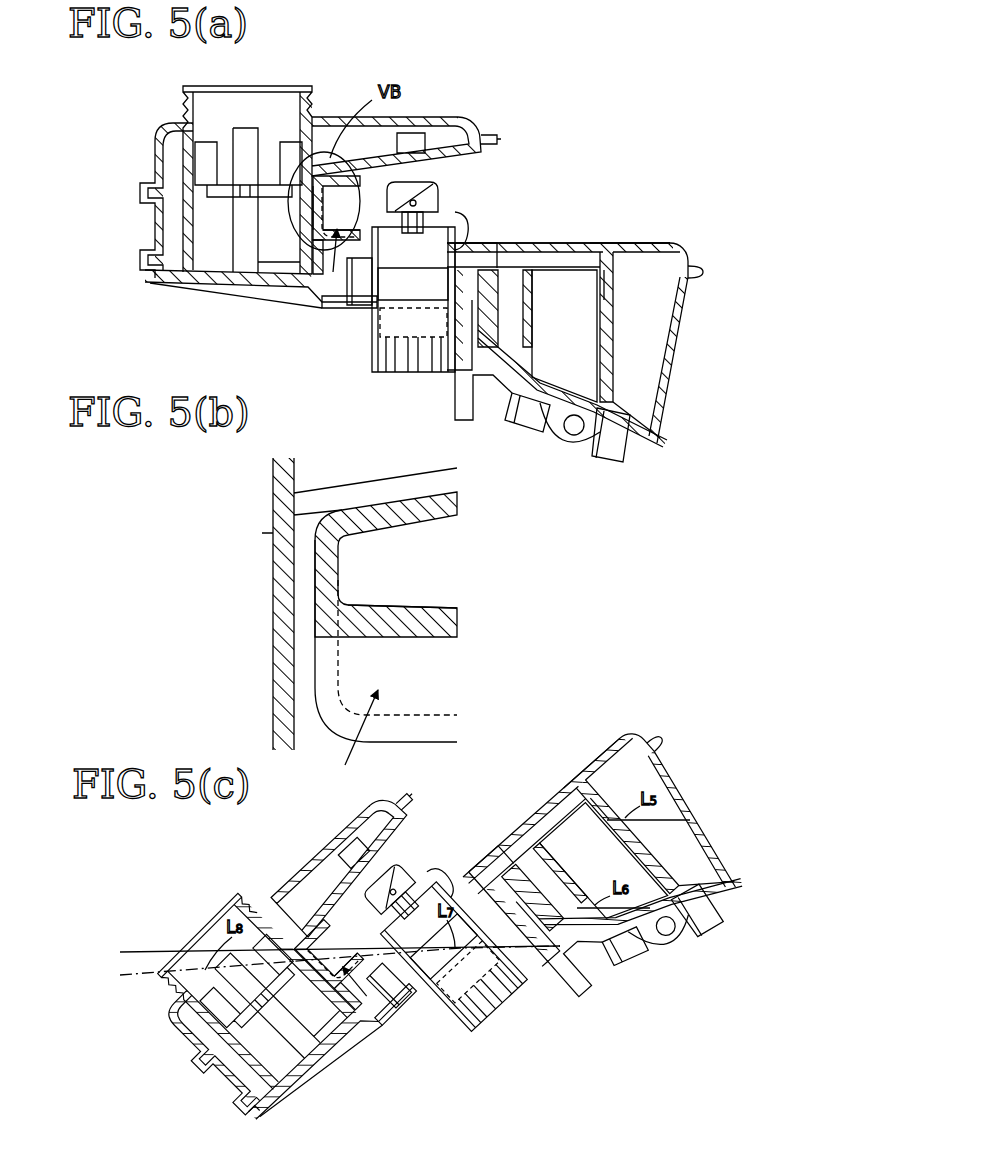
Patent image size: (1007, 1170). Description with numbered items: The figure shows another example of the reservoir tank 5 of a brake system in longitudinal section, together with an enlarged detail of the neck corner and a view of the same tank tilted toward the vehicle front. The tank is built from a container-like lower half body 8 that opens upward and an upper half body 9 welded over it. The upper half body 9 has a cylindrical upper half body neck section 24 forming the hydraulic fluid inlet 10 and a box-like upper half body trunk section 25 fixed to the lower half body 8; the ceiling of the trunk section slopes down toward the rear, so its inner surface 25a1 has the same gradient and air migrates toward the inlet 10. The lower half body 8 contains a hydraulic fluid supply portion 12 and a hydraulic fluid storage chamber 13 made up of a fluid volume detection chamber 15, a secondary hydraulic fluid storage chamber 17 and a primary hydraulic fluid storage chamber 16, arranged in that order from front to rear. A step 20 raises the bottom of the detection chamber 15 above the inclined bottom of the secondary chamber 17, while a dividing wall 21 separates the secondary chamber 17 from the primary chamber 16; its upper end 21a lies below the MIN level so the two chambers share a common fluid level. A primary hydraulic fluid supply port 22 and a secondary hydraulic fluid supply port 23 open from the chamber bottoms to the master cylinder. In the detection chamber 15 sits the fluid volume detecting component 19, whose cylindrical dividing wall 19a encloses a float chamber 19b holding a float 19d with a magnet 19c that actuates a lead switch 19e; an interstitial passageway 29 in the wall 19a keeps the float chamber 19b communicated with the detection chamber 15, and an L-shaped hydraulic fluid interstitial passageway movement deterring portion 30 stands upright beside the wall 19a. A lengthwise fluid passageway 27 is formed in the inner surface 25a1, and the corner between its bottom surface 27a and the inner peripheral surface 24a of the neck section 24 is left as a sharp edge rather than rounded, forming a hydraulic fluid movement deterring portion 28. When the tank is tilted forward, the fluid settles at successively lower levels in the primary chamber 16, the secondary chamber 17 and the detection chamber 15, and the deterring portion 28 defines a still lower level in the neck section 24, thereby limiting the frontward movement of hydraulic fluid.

In FIG. 5A, the reservoir tank 5 is at (598, 200).
In FIG. 5A, the lower half body 8 is at (683, 359).
In FIG. 5C, the lower half body 8 is at (703, 823).
In FIG. 5A, the upper half body 9 is at (565, 240).
In FIG. 5C, the upper half body 9 is at (500, 833).
In FIG. 5A, the hydraulic fluid inlet 10 is at (310, 97).
In FIG. 5C, the hydraulic fluid inlet 10 is at (223, 905).
In FIG. 5A, the hydraulic fluid supply portion 12 is at (254, 268).
In FIG. 5C, the hydraulic fluid supply portion 12 is at (303, 1073).
In FIG. 5A, the hydraulic fluid storage chamber 13 is at (638, 262).
In FIG. 5C, the hydraulic fluid storage chamber 13 is at (593, 788).
In FIG. 5A, the fluid volume detection chamber 15 is at (330, 297).
In FIG. 5C, the fluid volume detection chamber 15 is at (557, 970).
In FIG. 5A, the primary hydraulic fluid storage chamber 16 is at (659, 329).
In FIG. 5C, the primary hydraulic fluid storage chamber 16 is at (675, 850).
In FIG. 5A, the secondary hydraulic fluid storage chamber 17 is at (571, 331).
In FIG. 5C, the secondary hydraulic fluid storage chamber 17 is at (595, 879).
In FIG. 5A, the fluid volume detecting component 19 is at (452, 222).
In FIG. 5C, the fluid volume detecting component 19 is at (430, 875).
In FIG. 5A, the cylindrical dividing wall 19a is at (485, 247).
In FIG. 5C, the cylindrical dividing wall 19a is at (472, 873).
In FIG. 5A, the float chamber 19b is at (462, 240).
In FIG. 5C, the float chamber 19b is at (372, 962).
In FIG. 5A, the magnet 19c is at (408, 233).
In FIG. 5C, the magnet 19c is at (408, 907).
In FIG. 5A, the float 19d is at (397, 330).
In FIG. 5C, the float 19d is at (480, 1037).
In FIG. 5A, the lead switch 19e is at (416, 203).
In FIG. 5C, the lead switch 19e is at (393, 890).
In FIG. 5A, the step 20 is at (530, 344).
In FIG. 5C, the step 20 is at (545, 873).
In FIG. 5A, the dividing wall 21 is at (614, 368).
In FIG. 5C, the dividing wall 21 is at (660, 875).
In FIG. 5A, the upper end 21a is at (615, 295).
In FIG. 5C, the upper end 21a is at (607, 823).
In FIG. 5A, the primary hydraulic fluid supply port 22 is at (612, 456).
In FIG. 5C, the primary hydraulic fluid supply port 22 is at (710, 922).
In FIG. 5A, the secondary hydraulic fluid supply port 23 is at (530, 418).
In FIG. 5C, the secondary hydraulic fluid supply port 23 is at (628, 963).
In FIG. 5A, the upper half body neck section 24 is at (322, 186).
In FIG. 5B, the upper half body neck section 24 is at (340, 562).
In FIG. 5C, the upper half body neck section 24 is at (315, 945).
In FIG. 5A, the inner peripheral surface 24a is at (310, 186).
In FIG. 5B, the inner peripheral surface 24a is at (310, 587).
In FIG. 5C, the inner peripheral surface 24a is at (313, 970).
In FIG. 5A, the upper half body trunk section 25 is at (683, 247).
In FIG. 5C, the upper half body trunk section 25 is at (602, 743).
In FIG. 5A, the inner surface 25a1 is at (602, 246).
In FIG. 5C, the inner surface 25a1 is at (522, 847).
In FIG. 5A, the fluid passageway 27 is at (340, 240).
In FIG. 5B, the fluid passageway 27 is at (386, 683).
In FIG. 5C, the fluid passageway 27 is at (351, 1007).
In FIG. 5A, the bottom surface 27a is at (340, 220).
In FIG. 5B, the bottom surface 27a is at (405, 640).
In FIG. 5C, the bottom surface 27a is at (367, 930).
In FIG. 5A, the hydraulic fluid movement deterring portion 28 is at (318, 243).
In FIG. 5B, the hydraulic fluid movement deterring portion 28 is at (320, 622).
In FIG. 5C, the hydraulic fluid movement deterring portion 28 is at (330, 962).
In FIG. 5A, the interstitial passageway 29 is at (375, 285).
In FIG. 5C, the interstitial passageway 29 is at (423, 982).
In FIG. 5A, the hydraulic fluid interstitial passageway movement deterring portion 30 is at (375, 308).
In FIG. 5C, the hydraulic fluid interstitial passageway movement deterring portion 30 is at (403, 1003).